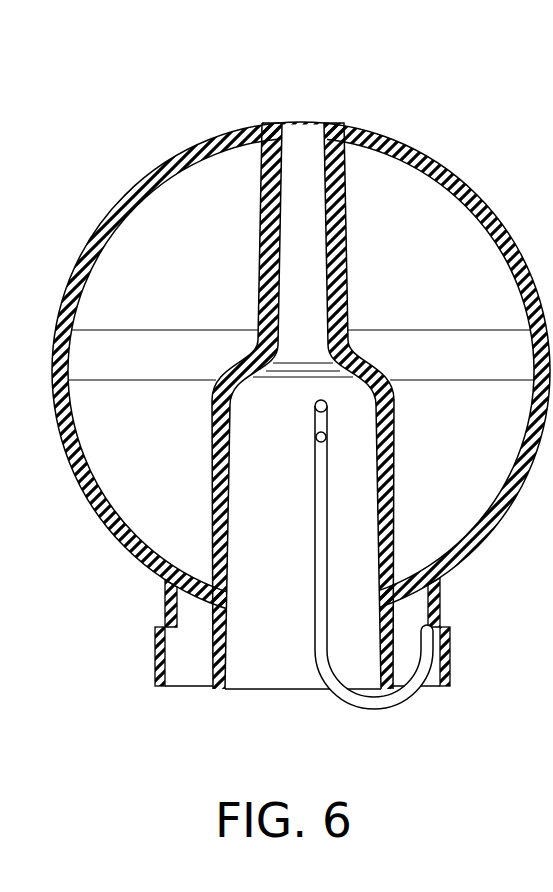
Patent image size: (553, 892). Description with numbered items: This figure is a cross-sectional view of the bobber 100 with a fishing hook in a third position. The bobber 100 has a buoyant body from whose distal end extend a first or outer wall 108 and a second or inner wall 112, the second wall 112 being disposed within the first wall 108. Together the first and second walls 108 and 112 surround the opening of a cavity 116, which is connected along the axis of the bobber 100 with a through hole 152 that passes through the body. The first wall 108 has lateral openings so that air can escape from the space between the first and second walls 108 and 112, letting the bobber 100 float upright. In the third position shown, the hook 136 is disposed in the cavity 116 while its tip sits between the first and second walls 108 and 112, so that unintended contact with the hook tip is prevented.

The bobber 100 is at (406, 72).
The through hole 152 is at (290, 88).
The first wall 108 is at (155, 651).
The second wall 112 is at (213, 692).
The cavity 116 is at (290, 716).
The hook 136 is at (388, 712).